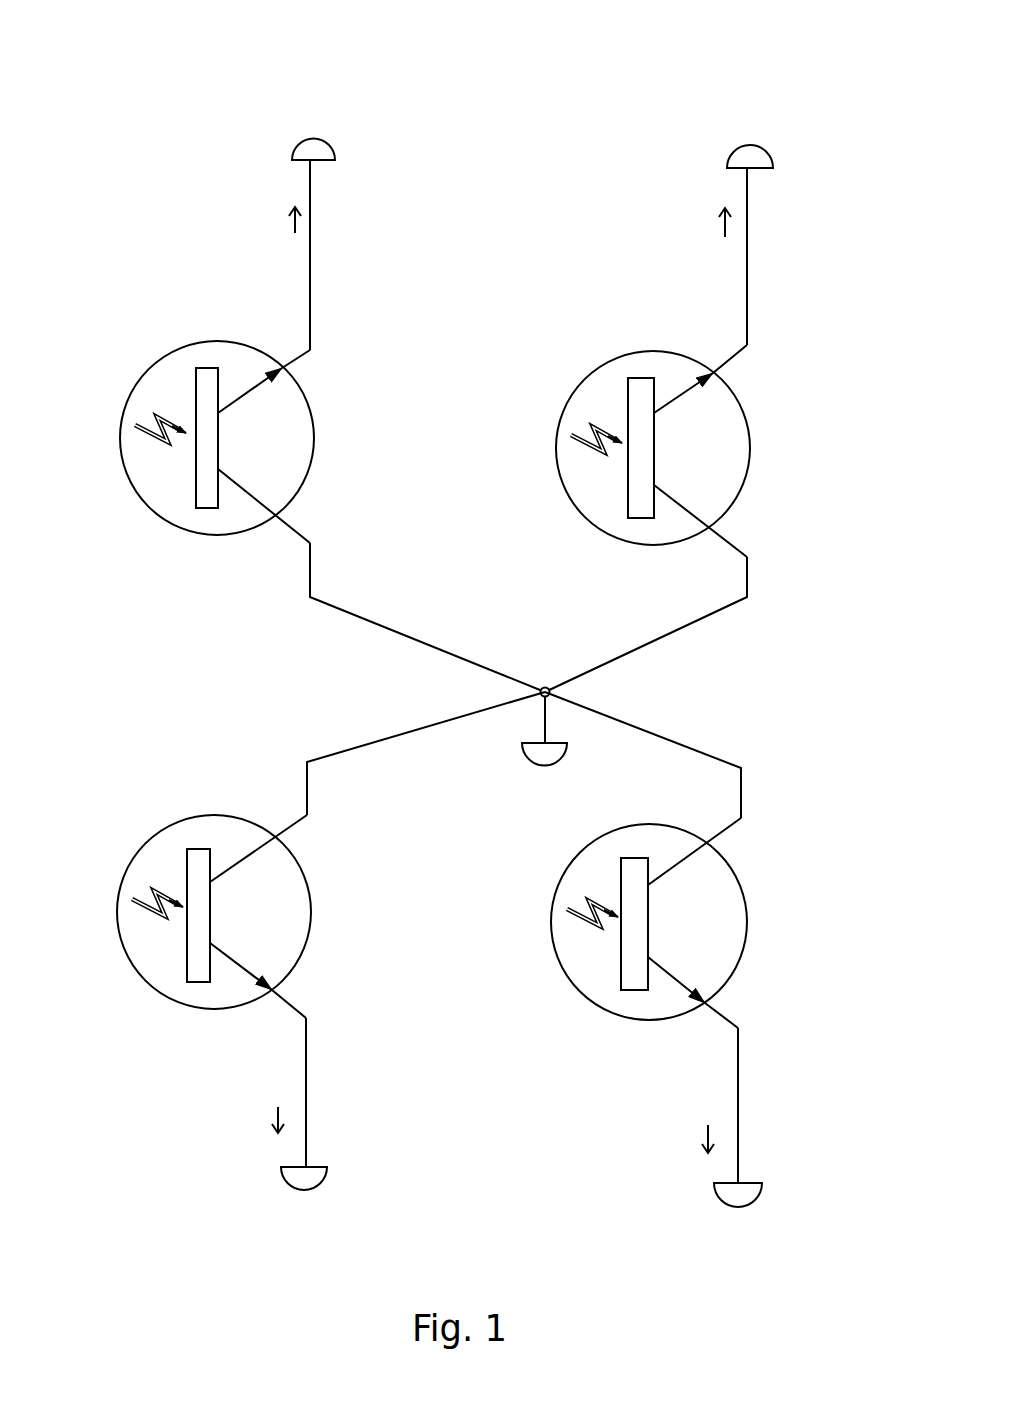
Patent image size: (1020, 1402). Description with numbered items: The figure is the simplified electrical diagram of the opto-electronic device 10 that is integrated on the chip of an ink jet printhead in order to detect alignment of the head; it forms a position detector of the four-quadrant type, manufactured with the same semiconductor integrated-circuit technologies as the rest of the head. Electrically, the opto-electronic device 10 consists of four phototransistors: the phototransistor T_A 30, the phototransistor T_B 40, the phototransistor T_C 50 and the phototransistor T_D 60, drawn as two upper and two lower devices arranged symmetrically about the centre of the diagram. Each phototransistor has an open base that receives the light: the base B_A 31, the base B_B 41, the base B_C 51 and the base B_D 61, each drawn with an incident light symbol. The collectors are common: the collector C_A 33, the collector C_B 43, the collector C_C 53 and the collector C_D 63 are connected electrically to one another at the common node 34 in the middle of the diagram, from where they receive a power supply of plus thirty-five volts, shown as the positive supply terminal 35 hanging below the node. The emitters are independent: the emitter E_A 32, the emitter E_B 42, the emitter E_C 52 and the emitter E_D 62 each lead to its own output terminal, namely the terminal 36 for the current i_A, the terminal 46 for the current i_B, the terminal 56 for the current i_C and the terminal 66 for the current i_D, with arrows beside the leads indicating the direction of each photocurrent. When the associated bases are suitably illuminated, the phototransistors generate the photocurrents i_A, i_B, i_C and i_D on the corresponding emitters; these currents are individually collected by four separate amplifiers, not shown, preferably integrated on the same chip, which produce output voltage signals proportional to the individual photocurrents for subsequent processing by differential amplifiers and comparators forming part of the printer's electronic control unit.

The opto-electronic device 10 is at (505, 98).
The phototransistor T_A 30 is at (313, 433).
The base B_A 31 is at (193, 400).
The emitter E_A 32 is at (243, 390).
The collector C_A 33 is at (257, 500).
The common node 34 is at (545, 688).
The supply voltage terminal V+ 35 is at (553, 768).
The output terminal i_A 36 is at (292, 151).
The phototransistor T_B 40 is at (312, 905).
The base B_B 41 is at (187, 872).
The emitter E_B 42 is at (253, 975).
The collector C_B 43 is at (240, 852).
The output terminal i_B 46 is at (295, 1188).
The phototransistor T_C 50 is at (746, 895).
The base B_C 51 is at (621, 884).
The emitter E_C 52 is at (680, 985).
The collector C_C 53 is at (668, 868).
The output terminal i_C 56 is at (730, 1205).
The phototransistor T_D 60 is at (752, 430).
The base B_D 61 is at (626, 400).
The emitter E_D 62 is at (680, 390).
The collector C_D 63 is at (698, 515).
The output terminal i_D 66 is at (727, 160).